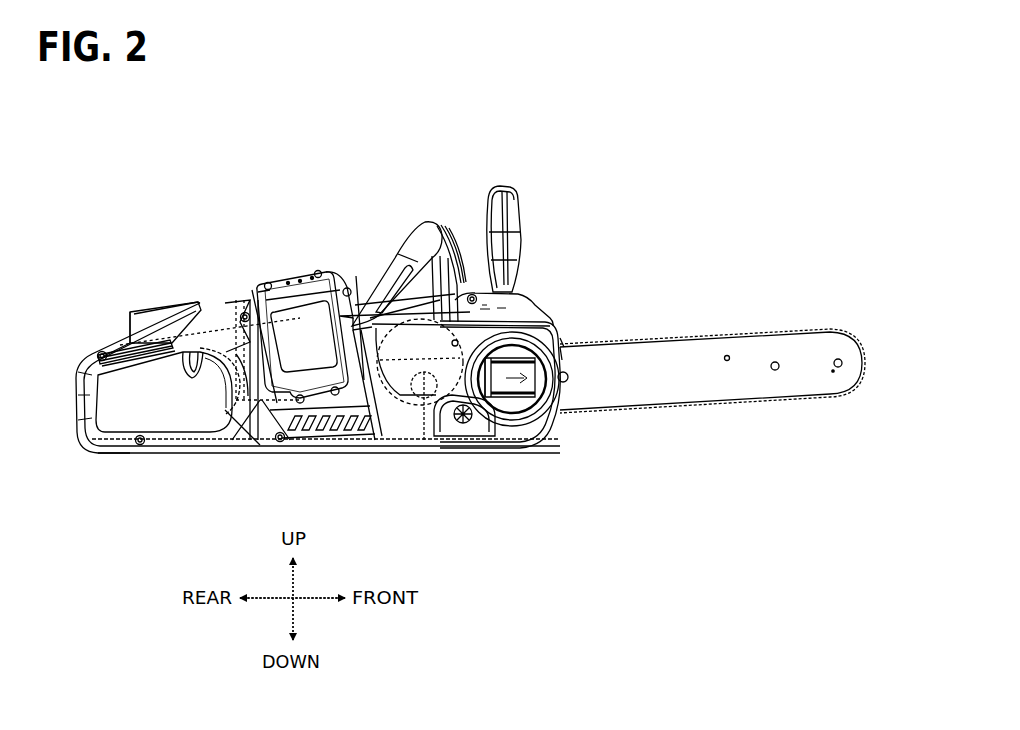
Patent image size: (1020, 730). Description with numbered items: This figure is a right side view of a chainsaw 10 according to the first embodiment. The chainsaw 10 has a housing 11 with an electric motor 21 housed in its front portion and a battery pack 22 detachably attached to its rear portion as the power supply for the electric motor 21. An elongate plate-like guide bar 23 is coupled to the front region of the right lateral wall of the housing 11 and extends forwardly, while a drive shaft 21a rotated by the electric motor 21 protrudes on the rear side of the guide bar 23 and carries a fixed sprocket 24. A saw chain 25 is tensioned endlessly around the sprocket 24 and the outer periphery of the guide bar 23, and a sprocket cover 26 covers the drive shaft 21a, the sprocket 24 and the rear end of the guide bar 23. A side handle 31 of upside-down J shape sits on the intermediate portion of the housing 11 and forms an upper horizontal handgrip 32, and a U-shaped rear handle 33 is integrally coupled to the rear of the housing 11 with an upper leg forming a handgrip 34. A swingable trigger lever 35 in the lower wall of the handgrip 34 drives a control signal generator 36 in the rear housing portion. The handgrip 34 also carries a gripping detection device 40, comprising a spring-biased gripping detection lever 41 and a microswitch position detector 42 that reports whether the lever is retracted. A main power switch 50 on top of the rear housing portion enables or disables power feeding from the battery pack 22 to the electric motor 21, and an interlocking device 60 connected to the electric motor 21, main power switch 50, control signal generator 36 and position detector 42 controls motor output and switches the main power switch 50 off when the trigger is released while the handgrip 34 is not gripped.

The chainsaw 10 is at (431, 163).
The housing 11 is at (355, 290).
The electric motor 21 is at (388, 437).
The drive shaft 21a is at (422, 432).
The battery pack 22 is at (283, 290).
The guide bar 23 is at (662, 362).
The sprocket 24 is at (442, 440).
The saw chain 25 is at (701, 340).
The sprocket cover 26 is at (513, 435).
The side handle 31 is at (406, 232).
The handgrip 32 is at (440, 230).
The rear handle 33 is at (157, 457).
The handgrip 34 is at (116, 345).
The trigger lever 35 is at (190, 362).
The control signal generator 36 is at (220, 368).
The gripping detection device 40 is at (165, 288).
The gripping detection lever 41 is at (146, 318).
The position detector 42 is at (148, 366).
The main power switch 50 is at (240, 300).
The interlocking device 60 is at (248, 444).